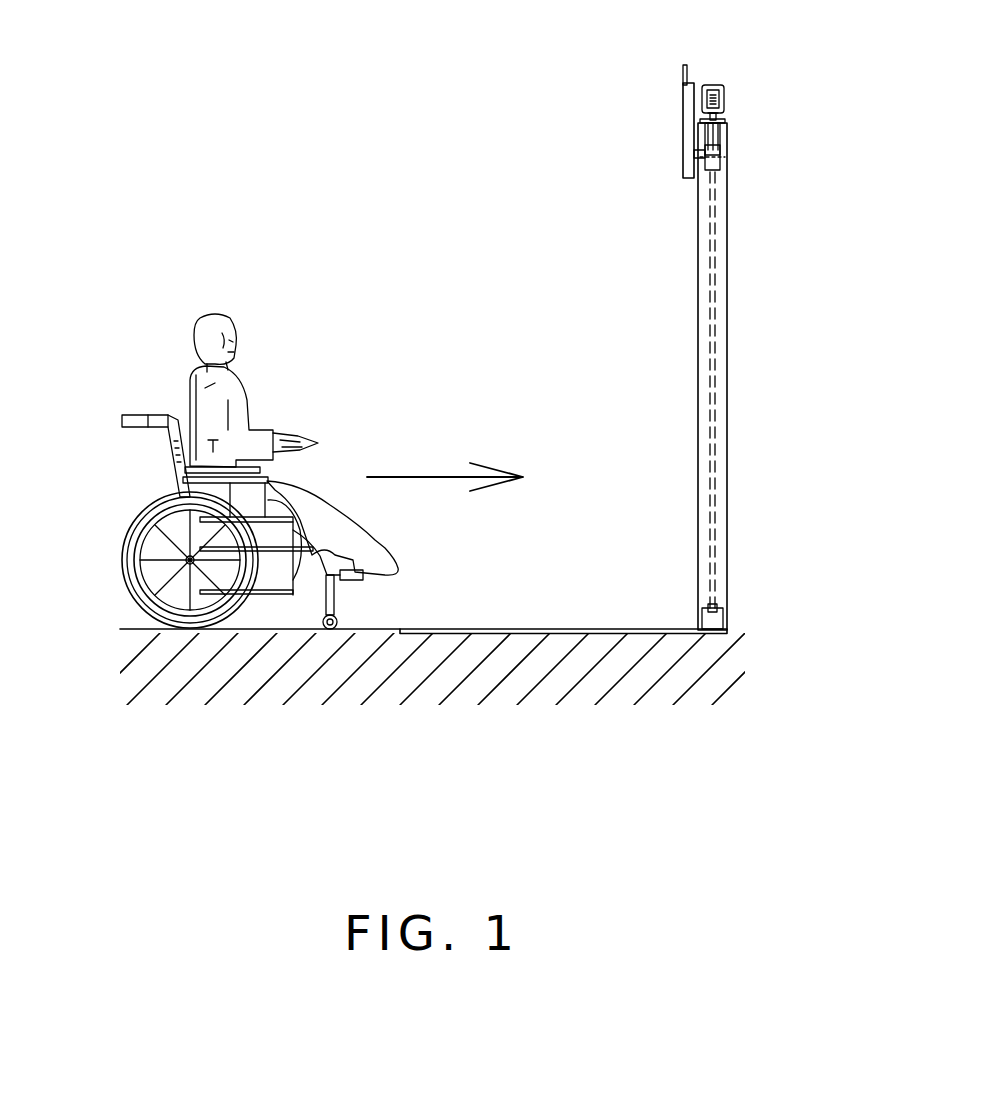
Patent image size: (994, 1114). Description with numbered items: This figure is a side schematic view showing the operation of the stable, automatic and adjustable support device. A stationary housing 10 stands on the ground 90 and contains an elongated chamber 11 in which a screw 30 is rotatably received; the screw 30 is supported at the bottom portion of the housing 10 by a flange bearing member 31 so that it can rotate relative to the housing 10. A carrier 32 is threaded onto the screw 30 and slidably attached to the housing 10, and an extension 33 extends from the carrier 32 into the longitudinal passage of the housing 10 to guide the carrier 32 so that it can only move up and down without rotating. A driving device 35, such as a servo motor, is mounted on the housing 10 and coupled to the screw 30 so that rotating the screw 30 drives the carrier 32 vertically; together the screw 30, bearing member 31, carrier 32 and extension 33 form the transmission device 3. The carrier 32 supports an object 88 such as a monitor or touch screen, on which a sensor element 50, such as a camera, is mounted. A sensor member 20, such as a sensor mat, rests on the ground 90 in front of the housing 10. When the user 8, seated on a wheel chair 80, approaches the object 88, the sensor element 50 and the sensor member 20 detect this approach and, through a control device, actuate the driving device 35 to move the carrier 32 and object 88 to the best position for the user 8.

The transmission device 3 is at (720, 305).
The user 8 is at (222, 398).
The housing 10 is at (727, 517).
The chamber 11 is at (718, 456).
The sensor member 20 is at (552, 634).
The screw 30 is at (713, 380).
The bearing member 31 is at (716, 615).
The carrier 32 is at (720, 152).
The extension 33 is at (723, 158).
The driving device 35 is at (719, 100).
The sensor element 50 is at (683, 75).
The wheel chair 80 is at (134, 416).
The object 88 is at (683, 152).
The ground 90 is at (333, 682).